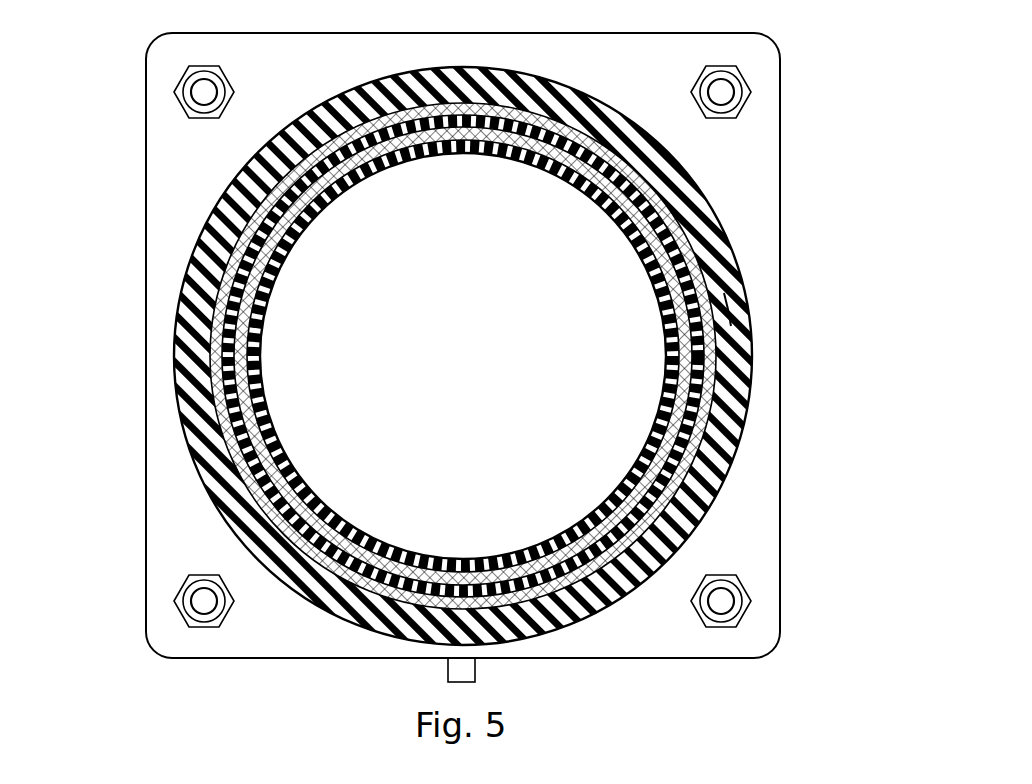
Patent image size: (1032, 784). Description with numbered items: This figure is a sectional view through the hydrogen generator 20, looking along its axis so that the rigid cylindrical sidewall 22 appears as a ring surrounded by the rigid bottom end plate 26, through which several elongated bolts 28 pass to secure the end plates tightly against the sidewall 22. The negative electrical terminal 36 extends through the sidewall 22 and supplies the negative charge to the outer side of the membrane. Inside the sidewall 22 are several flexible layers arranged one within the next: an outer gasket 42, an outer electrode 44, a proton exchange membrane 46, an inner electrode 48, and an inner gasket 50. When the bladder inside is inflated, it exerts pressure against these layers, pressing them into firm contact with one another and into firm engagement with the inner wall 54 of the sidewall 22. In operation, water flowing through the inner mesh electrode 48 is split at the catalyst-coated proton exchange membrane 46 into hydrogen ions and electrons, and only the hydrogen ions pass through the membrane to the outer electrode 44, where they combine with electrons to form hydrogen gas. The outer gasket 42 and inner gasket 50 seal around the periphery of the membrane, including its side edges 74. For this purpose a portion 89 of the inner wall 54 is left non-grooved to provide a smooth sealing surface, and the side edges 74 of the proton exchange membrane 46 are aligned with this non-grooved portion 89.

The hydrogen generator 20 is at (404, 345).
The cylindrical sidewall 22 is at (742, 432).
The bottom end plate 26 is at (650, 77).
The elongated bolts 28 is at (726, 90).
The negative electrical terminal 36 is at (478, 666).
The outer gasket 42 is at (700, 272).
The outer electrode 44 is at (660, 223).
The proton exchange membrane 46 is at (205, 352).
The inner electrode 48 is at (687, 451).
The inner gasket 50 is at (476, 365).
The inner wall 54 is at (218, 228).
The side edges 74 is at (700, 312).
The non-grooved portion 89 is at (727, 309).